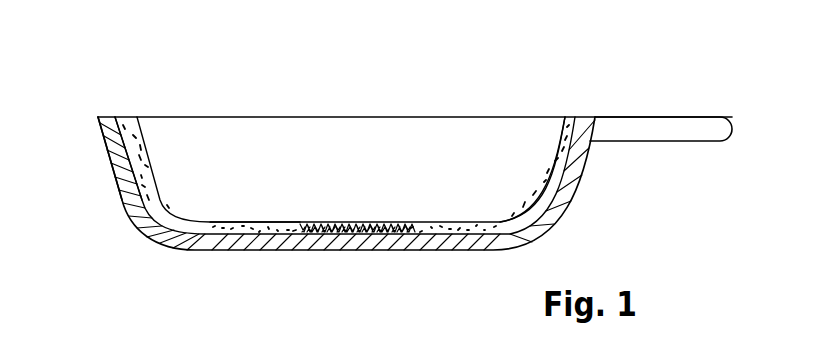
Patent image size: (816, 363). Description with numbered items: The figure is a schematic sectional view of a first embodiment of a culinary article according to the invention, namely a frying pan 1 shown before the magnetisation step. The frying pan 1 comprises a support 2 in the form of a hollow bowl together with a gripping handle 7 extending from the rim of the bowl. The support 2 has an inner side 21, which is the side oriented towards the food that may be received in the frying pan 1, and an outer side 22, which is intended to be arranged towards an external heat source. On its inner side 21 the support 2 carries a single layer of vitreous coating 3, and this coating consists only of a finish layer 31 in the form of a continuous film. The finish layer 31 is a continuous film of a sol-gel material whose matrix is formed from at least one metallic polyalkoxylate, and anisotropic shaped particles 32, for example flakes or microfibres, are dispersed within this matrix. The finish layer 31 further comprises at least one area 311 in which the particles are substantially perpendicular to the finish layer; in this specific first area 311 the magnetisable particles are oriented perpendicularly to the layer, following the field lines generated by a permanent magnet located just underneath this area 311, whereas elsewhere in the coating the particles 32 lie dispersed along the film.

The frying pan 1 is at (438, 113).
The support 2 is at (570, 191).
The inner side 21 is at (134, 130).
The outer side 22 is at (105, 143).
The vitreous coating 3 is at (155, 200).
The finish layer 31 is at (570, 125).
The area 311 is at (360, 228).
The anisotropic shaped particles 32 is at (237, 230).
The gripping handle 7 is at (677, 127).